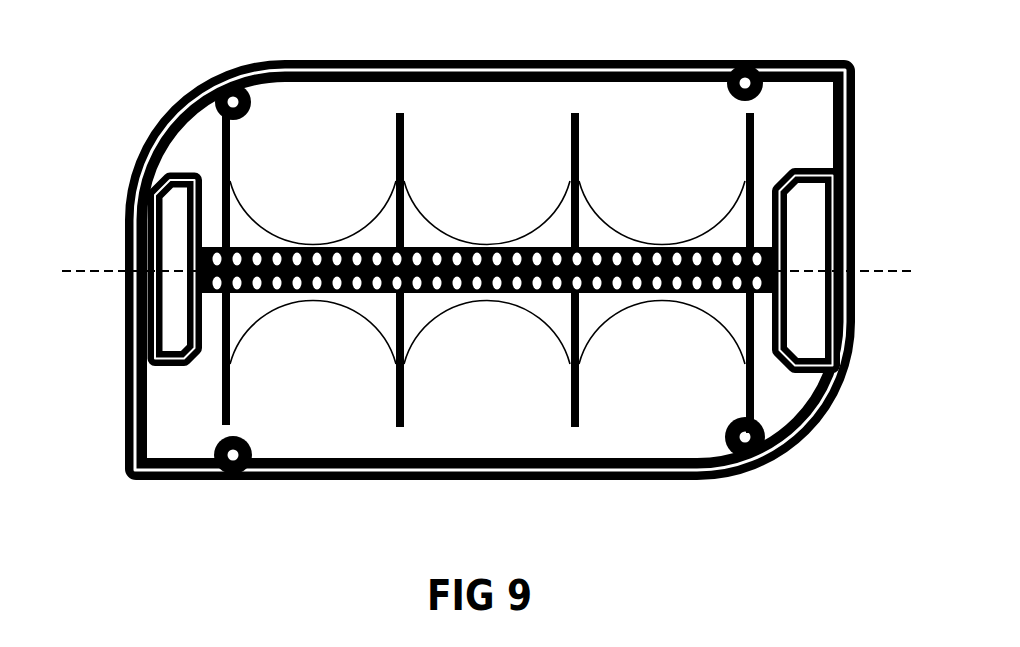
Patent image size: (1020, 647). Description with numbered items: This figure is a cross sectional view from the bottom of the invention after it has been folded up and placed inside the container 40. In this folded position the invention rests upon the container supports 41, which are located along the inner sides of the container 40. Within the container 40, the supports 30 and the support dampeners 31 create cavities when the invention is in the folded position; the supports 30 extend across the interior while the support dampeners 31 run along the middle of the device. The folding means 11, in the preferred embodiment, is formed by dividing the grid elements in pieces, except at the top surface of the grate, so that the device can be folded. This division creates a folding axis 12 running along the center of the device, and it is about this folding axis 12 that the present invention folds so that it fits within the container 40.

The container 40 is at (470, 70).
The container supports 41 is at (168, 228).
The support dampeners 31 is at (245, 233).
The supports 30 is at (228, 395).
The folding means 11 is at (783, 283).
The folding axis 12 is at (889, 256).